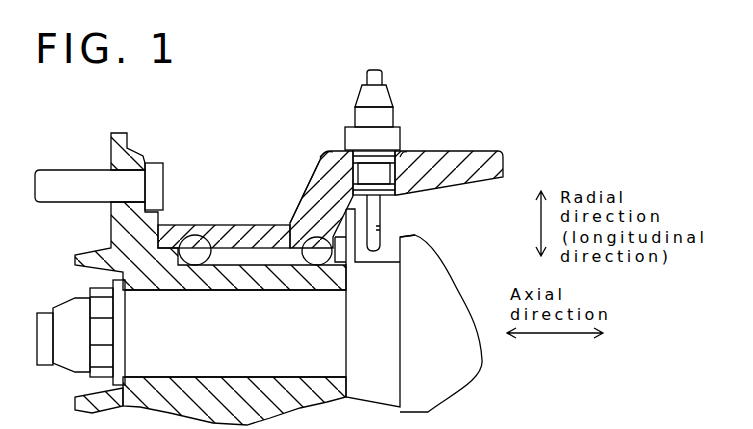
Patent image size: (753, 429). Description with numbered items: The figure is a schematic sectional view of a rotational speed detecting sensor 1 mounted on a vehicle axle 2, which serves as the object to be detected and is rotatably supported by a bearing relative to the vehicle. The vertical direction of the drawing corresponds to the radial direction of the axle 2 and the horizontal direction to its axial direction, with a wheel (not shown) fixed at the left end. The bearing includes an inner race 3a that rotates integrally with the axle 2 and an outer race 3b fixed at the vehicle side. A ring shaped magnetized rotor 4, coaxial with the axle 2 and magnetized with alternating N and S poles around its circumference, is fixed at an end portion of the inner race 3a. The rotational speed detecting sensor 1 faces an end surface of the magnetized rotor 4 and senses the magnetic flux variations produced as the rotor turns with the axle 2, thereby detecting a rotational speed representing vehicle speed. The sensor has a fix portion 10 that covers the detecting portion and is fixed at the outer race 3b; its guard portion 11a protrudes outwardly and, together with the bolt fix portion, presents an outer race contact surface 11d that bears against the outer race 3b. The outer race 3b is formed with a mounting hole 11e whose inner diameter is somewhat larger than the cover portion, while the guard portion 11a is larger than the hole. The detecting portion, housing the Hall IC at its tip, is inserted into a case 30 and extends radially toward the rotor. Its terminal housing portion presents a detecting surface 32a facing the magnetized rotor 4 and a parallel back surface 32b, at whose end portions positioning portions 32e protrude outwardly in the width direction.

The rotational speed detecting sensor 1 is at (375, 160).
The fix portion 10 is at (397, 122).
The guard portion 11a is at (347, 136).
The outer race contact surface 11d is at (325, 154).
The mounting hole 11e is at (343, 175).
The axle 2 is at (322, 370).
The inner race 3a is at (238, 279).
The outer race 3b is at (207, 226).
The magnetized rotor 4 is at (340, 283).
The case 30 is at (383, 205).
The detecting surface 32a is at (318, 196).
The back surface 32b is at (380, 262).
The positioning portions 32e is at (403, 236).